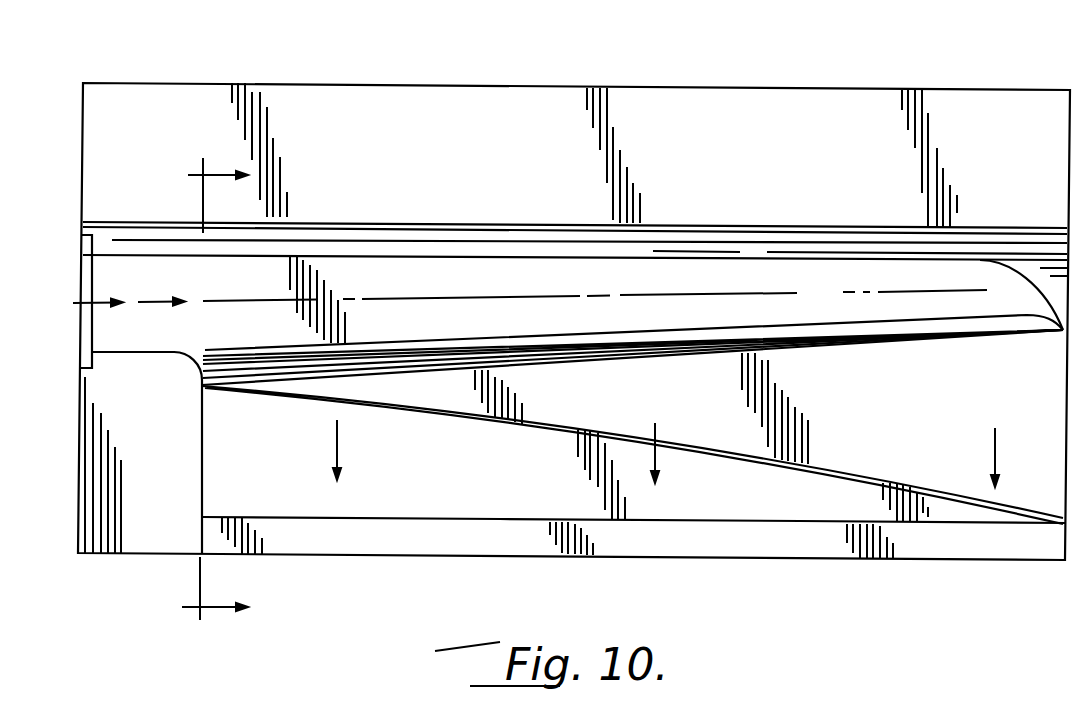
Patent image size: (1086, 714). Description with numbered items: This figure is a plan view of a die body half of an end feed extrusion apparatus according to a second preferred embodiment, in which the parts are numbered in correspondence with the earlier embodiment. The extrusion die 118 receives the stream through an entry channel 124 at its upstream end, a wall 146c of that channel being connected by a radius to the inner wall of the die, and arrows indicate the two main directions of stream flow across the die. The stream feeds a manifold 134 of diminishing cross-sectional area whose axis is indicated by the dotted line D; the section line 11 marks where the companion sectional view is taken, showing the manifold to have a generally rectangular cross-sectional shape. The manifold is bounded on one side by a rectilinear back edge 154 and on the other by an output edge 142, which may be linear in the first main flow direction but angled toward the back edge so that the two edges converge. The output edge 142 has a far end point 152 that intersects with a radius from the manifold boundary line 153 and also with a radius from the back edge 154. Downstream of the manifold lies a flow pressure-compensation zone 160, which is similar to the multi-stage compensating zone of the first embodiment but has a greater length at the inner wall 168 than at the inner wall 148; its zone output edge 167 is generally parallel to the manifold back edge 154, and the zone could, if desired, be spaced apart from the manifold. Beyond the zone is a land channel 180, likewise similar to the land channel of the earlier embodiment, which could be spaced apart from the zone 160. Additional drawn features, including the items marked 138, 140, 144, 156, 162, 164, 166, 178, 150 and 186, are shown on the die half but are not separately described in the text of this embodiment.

The extrusion die 118 is at (348, 80).
The entry channel 124 is at (134, 266).
The back edge 154 is at (446, 257).
The manifold 134 is at (296, 250).
The rounded nose 144 is at (1048, 278).
The dotted line D is at (466, 298).
The shoulder 138 is at (183, 352).
The upper wedge surface 140 is at (207, 380).
The output edge 142 is at (422, 370).
The manifold boundary line 153 is at (585, 337).
The lip layer 156 is at (720, 337).
The far end point 152 is at (1060, 337).
The channel wall 146c is at (137, 346).
The flow pressure-compensation zone 160 is at (235, 420).
The vertical wall 162 is at (305, 420).
The inner wall 148 is at (202, 482).
The inclined lower wall 166 is at (555, 427).
The slot 164 is at (790, 413).
The inner wall 168 is at (1063, 420).
The zone output edge 167 is at (428, 518).
The lower plate surface 178 is at (517, 518).
The land channel 180 is at (736, 520).
The lower plate 150 is at (658, 557).
The lower plate bottom 186 is at (467, 540).
The section line 11 is at (194, 393).